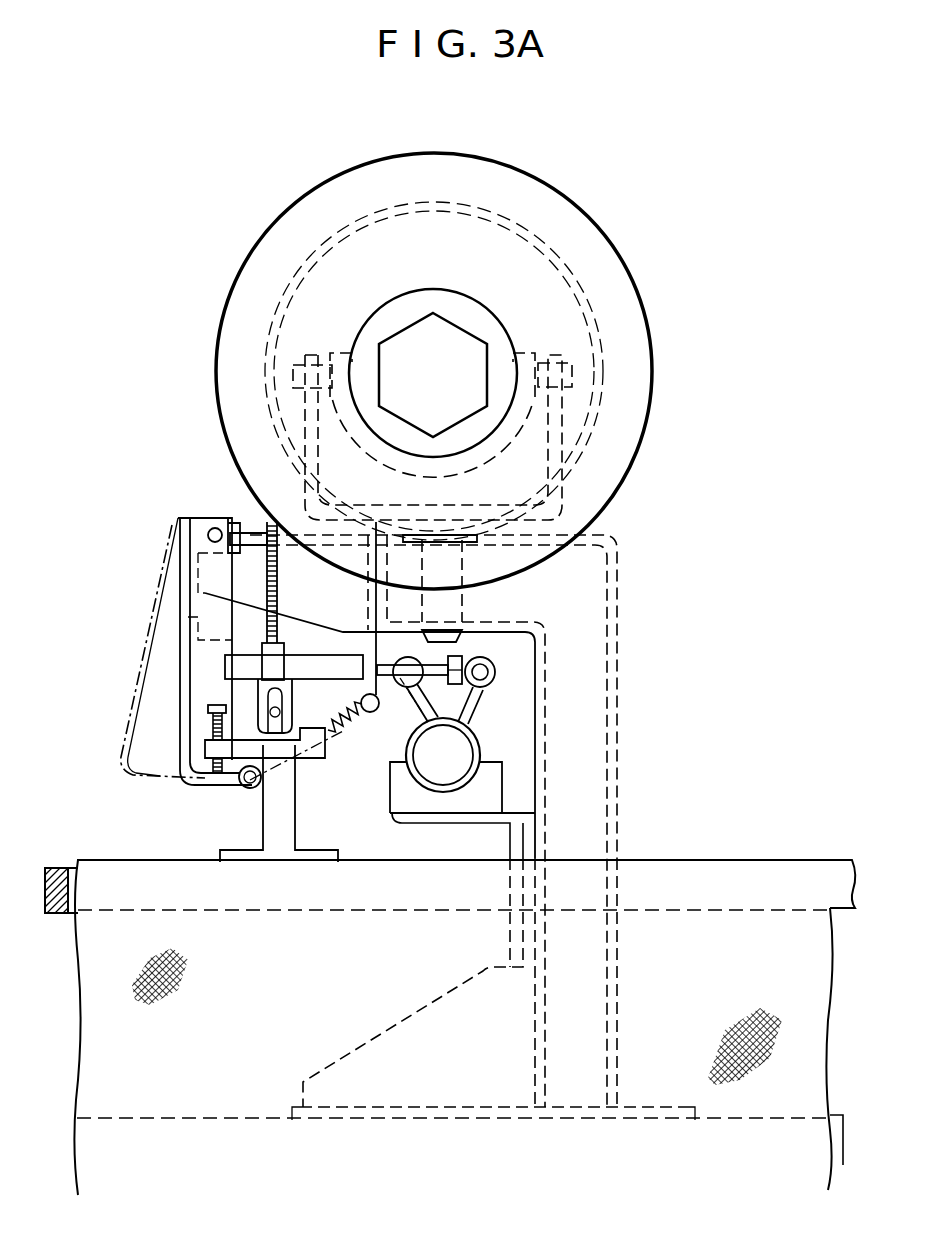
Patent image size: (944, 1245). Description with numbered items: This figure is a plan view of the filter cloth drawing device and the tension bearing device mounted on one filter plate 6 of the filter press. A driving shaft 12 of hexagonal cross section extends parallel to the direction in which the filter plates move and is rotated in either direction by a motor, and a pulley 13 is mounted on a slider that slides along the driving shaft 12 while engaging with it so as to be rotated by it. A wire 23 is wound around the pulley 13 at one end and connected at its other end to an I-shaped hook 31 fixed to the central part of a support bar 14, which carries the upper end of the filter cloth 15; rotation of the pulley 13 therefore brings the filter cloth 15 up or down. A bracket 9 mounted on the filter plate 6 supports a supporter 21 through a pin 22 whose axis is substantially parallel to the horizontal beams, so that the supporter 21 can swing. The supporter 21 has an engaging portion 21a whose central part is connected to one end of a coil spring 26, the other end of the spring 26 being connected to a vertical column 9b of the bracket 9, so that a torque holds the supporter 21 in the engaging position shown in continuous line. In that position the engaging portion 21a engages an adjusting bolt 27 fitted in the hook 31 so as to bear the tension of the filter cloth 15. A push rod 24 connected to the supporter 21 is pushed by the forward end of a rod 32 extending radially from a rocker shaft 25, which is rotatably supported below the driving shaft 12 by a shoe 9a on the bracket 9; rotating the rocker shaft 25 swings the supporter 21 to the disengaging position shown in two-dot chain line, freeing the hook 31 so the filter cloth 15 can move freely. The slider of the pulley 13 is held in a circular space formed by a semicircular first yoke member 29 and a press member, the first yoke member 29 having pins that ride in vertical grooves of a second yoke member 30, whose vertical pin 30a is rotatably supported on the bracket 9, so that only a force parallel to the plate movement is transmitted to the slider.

The pulley 13 is at (592, 235).
The driving shaft 12 is at (465, 335).
The first yoke member 29 is at (523, 398).
The second yoke member 30 is at (557, 428).
The pin 30a is at (462, 605).
The bracket 9 is at (605, 697).
The shoe 9a is at (390, 800).
The vertical column 9b is at (378, 712).
The rocker shaft 25 is at (480, 745).
The rod 32 is at (492, 684).
The pin 22 is at (215, 528).
The supporter 21 is at (180, 690).
The engaging portion 21a is at (180, 790).
The adjusting bolt 27 is at (205, 722).
The coil spring 26 is at (337, 752).
The wire 23 is at (278, 597).
The push rod 24 is at (330, 660).
The I-shaped hook 31 is at (283, 848).
The support bar 14 is at (850, 862).
The filter cloth 15 is at (830, 1020).
The filter plate 6 is at (843, 1148).